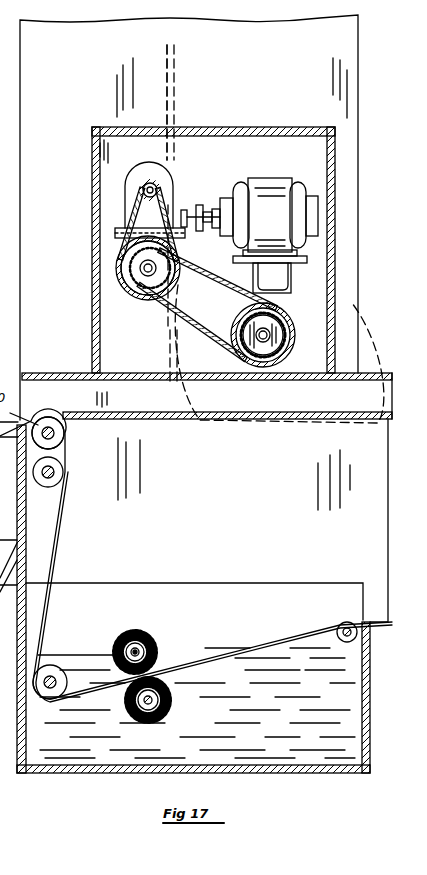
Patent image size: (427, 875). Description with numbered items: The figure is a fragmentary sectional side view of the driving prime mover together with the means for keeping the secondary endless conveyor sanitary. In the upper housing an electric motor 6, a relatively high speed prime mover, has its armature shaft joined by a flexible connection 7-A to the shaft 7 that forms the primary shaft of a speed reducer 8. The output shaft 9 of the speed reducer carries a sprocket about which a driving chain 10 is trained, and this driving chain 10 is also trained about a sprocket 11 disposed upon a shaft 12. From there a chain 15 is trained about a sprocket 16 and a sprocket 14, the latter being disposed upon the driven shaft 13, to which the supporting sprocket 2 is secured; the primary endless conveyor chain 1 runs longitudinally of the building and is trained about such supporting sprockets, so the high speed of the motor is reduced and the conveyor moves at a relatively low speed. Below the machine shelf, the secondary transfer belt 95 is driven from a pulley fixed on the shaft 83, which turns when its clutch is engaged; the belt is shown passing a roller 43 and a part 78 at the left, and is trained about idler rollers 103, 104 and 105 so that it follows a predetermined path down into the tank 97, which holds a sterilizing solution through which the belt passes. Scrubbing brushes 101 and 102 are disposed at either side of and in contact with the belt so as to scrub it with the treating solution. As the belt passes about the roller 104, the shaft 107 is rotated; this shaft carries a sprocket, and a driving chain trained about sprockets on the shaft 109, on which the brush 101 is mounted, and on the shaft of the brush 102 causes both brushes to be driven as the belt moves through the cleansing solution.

The primary endless conveyor chain 1 is at (178, 116).
The supporting sprocket 2 is at (345, 300).
The electric motor 6 is at (270, 182).
The shaft 7 is at (200, 206).
The flexible connection 7-A is at (216, 208).
The speed reducer 8 is at (137, 178).
The output shaft 9 is at (157, 185).
The driving chain 10 is at (132, 218).
The sprocket 11 is at (140, 284).
The shaft 12 is at (145, 272).
The driven shaft 13 is at (272, 335).
The sprocket 14 is at (288, 345).
The chain 15 is at (187, 318).
The sprocket 16 is at (182, 263).
The roller 43 is at (64, 432).
The guide 78 is at (19, 415).
The shaft 83 is at (49, 428).
The secondary transfer belt 95 is at (180, 413).
The tank 97 is at (122, 771).
The scrubbing brush 101 is at (141, 640).
The scrubbing brush 102 is at (166, 712).
The idler roller 103 is at (347, 621).
The idler roller 104 is at (58, 660).
The idler roller 105 is at (59, 472).
The shaft 107 is at (55, 679).
The shaft 109 is at (150, 650).